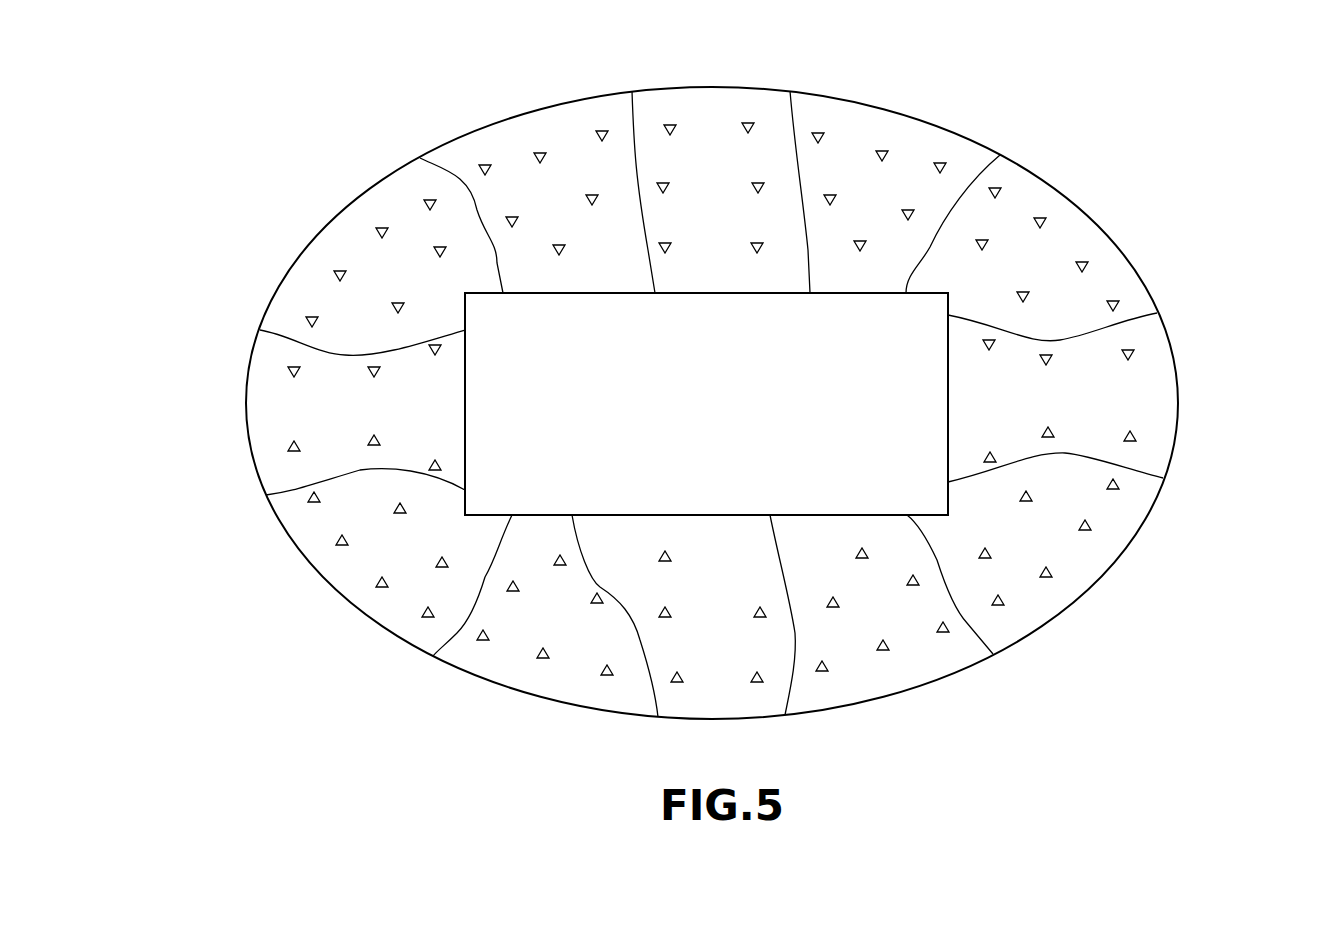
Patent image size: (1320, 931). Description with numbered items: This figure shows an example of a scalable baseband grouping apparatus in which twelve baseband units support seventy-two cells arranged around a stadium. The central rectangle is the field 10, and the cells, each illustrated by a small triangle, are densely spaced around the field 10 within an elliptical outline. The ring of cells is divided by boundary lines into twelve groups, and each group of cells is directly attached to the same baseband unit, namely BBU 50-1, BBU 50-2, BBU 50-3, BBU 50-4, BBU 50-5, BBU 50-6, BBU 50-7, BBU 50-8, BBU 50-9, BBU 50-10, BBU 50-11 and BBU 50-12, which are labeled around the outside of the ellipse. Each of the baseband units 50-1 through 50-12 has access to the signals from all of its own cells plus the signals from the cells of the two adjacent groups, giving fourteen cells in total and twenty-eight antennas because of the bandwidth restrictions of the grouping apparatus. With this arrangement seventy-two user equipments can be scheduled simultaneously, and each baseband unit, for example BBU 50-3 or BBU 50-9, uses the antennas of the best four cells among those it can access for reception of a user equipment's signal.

The field 10 is at (722, 417).
The baseband unit 50-1 is at (326, 210).
The baseband unit 50-2 is at (522, 102).
The baseband unit 50-3 is at (712, 75).
The baseband unit 50-4 is at (897, 100).
The baseband unit 50-5 is at (1092, 200).
The baseband unit 50-6 is at (1188, 400).
The baseband unit 50-7 is at (1104, 600).
The baseband unit 50-8 is at (896, 706).
The baseband unit 50-9 is at (722, 734).
The baseband unit 50-10 is at (522, 705).
The baseband unit 50-11 is at (300, 576).
The baseband unit 50-12 is at (238, 406).